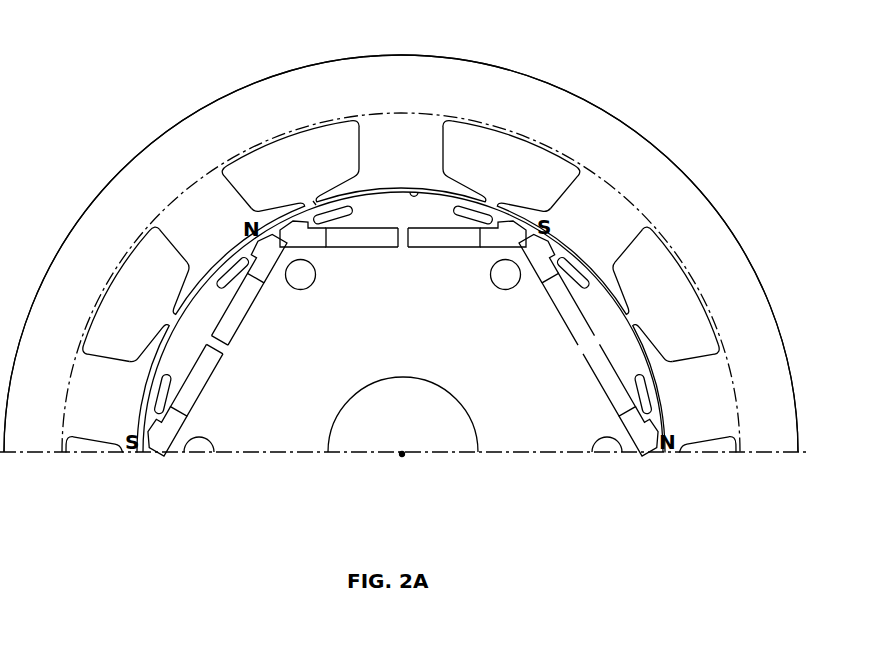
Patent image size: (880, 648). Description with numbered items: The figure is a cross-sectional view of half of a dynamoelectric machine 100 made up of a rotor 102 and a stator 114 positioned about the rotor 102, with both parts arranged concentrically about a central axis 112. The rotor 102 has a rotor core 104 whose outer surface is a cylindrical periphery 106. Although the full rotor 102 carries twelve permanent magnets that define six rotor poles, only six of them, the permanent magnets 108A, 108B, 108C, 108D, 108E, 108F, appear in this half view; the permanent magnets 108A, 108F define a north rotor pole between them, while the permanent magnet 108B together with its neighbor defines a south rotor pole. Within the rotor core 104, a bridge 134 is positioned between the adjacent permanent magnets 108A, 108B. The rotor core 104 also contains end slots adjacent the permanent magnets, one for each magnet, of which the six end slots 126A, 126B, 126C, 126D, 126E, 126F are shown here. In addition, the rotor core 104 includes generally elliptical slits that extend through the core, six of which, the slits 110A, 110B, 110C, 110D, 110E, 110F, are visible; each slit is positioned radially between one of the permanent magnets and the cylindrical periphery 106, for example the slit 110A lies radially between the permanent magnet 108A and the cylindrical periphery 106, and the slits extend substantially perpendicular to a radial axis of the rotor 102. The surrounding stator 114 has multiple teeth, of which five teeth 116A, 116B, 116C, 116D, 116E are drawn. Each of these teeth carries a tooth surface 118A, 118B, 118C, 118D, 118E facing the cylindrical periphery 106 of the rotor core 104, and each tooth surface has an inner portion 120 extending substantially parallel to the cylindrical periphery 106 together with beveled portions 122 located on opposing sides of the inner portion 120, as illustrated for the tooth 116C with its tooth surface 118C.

The dynamoelectric machine 100 is at (628, 80).
The rotor 102 is at (303, 438).
The rotor core 104 is at (363, 377).
The cylindrical periphery 106 is at (163, 330).
The permanent magnet 108A is at (370, 240).
The permanent magnet 108B is at (445, 240).
The permanent magnet 108C is at (560, 318).
The permanent magnet 108D is at (607, 385).
The permanent magnet 108E is at (192, 396).
The permanent magnet 108F is at (243, 316).
The slit 110A is at (325, 212).
The slit 110B is at (477, 210).
The slit 110C is at (583, 266).
The slit 110D is at (648, 392).
The slit 110E is at (158, 393).
The slit 110F is at (216, 272).
The central axis 112 is at (402, 458).
The stator 114 is at (710, 190).
The tooth 116A is at (85, 394).
The tooth 116B is at (206, 194).
The tooth 116C is at (369, 126).
The tooth 116D is at (617, 200).
The tooth 116E is at (727, 360).
The tooth surface 118A is at (139, 431).
The tooth surface 118B is at (231, 256).
The tooth surface 118C is at (398, 193).
The tooth surface 118D is at (560, 253).
The tooth surface 118E is at (657, 417).
The inner portion 120 is at (418, 196).
The beveled portions 122 is at (318, 206).
The end slot 126A is at (307, 240).
The end slot 126B is at (490, 243).
The end slot 126C is at (548, 270).
The end slot 126D is at (645, 438).
The end slot 126E is at (165, 440).
The end slot 126F is at (270, 262).
The bridge 134 is at (402, 240).